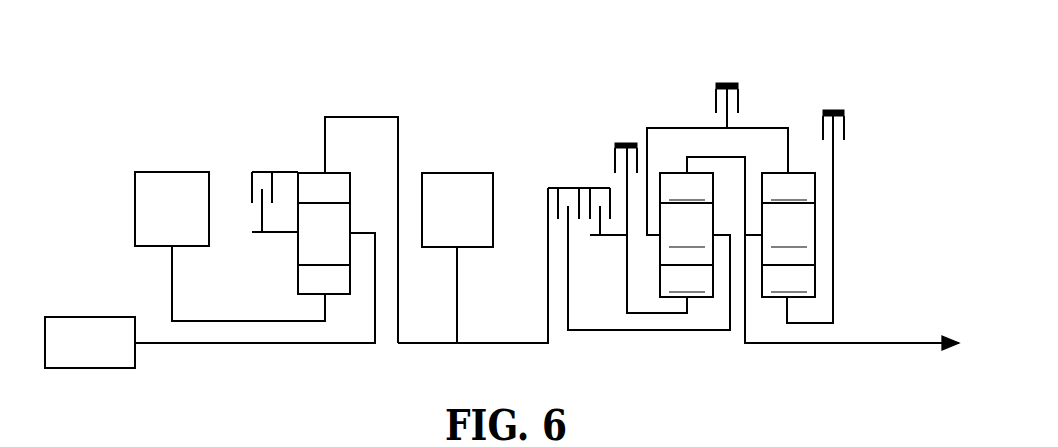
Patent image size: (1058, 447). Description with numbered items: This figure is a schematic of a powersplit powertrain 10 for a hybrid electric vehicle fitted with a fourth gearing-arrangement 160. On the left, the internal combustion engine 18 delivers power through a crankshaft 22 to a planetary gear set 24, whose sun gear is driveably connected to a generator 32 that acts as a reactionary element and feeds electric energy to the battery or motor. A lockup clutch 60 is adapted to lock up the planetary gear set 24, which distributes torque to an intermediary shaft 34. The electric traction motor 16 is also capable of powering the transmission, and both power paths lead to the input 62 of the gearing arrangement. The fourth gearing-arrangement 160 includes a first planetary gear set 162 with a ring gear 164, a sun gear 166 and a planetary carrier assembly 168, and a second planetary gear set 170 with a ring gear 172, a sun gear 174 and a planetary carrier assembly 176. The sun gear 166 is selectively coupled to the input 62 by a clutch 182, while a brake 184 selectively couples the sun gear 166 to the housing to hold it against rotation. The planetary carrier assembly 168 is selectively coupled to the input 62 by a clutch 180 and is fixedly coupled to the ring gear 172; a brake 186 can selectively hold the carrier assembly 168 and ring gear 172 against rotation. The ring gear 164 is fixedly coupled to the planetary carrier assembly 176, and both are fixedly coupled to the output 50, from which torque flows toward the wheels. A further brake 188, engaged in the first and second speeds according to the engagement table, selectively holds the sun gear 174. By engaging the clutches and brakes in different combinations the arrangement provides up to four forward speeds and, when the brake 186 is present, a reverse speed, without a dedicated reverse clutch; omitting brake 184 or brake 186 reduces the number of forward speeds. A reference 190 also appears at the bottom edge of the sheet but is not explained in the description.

The powersplit powertrain 10 is at (236, 90).
The internal combustion engine 18 is at (108, 317).
The crankshaft 22 is at (268, 345).
The generator 32 is at (190, 172).
The lockup clutch 60 is at (284, 172).
The planetary gear set 24 is at (337, 173).
The intermediary shaft 34 is at (425, 345).
The electric traction motor 16 is at (440, 173).
The input 62 is at (502, 345).
The fourth gearing-arrangement 160 is at (812, 62).
The clutch 180 is at (571, 188).
The clutch 182 is at (600, 188).
The brake 184 is at (627, 143).
The first planetary gear set 162 is at (798, 205).
The ring gear 164 is at (686, 188).
The planetary carrier assembly 168 is at (686, 234).
The sun gear 166 is at (686, 281).
The second planetary gear set 170 is at (789, 209).
The ring gear 172 is at (788, 188).
The planetary carrier assembly 176 is at (788, 234).
The sun gear 174 is at (788, 281).
The brake 186 is at (722, 83).
The brake 188 is at (835, 110).
The output 50 is at (865, 345).
The output 190 is at (884, 445).